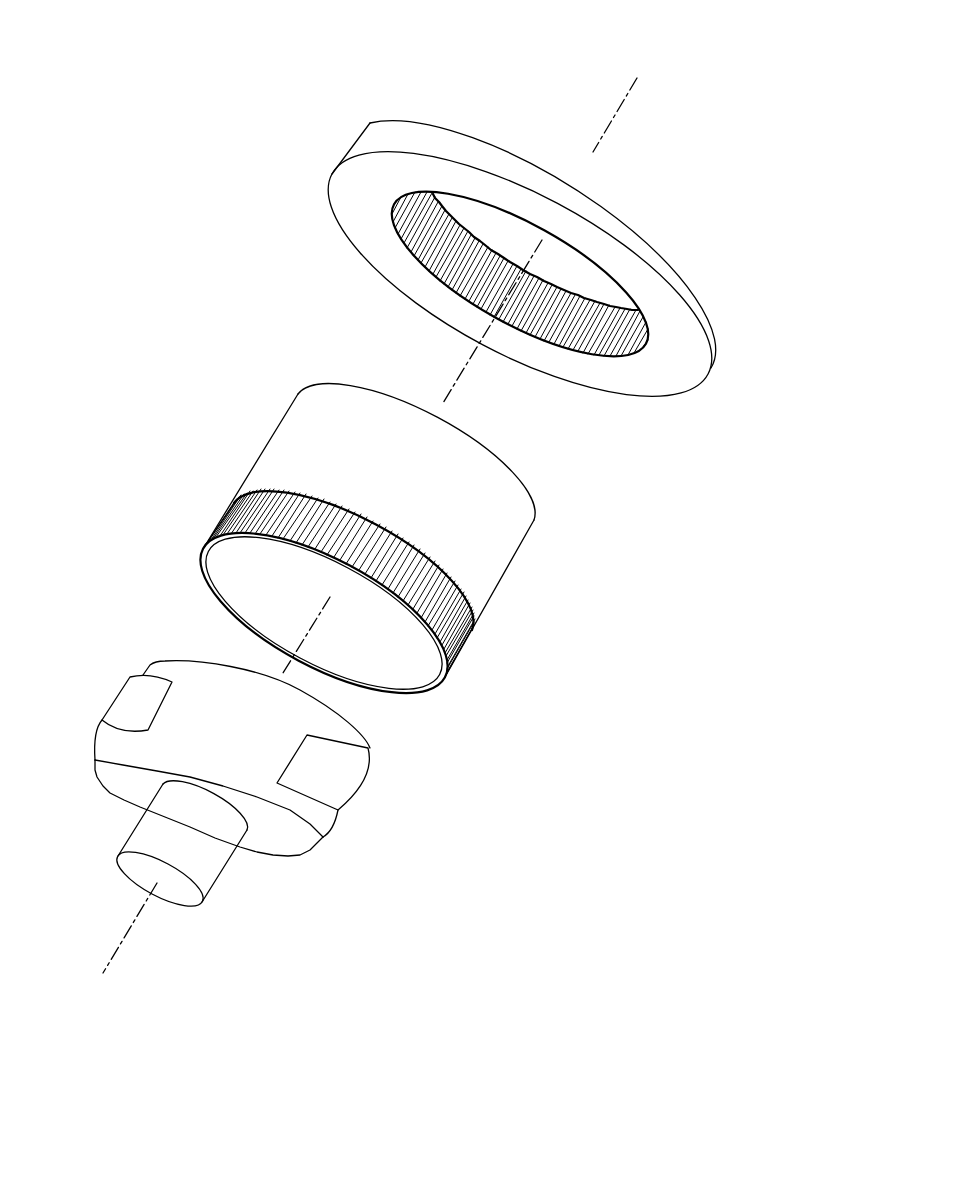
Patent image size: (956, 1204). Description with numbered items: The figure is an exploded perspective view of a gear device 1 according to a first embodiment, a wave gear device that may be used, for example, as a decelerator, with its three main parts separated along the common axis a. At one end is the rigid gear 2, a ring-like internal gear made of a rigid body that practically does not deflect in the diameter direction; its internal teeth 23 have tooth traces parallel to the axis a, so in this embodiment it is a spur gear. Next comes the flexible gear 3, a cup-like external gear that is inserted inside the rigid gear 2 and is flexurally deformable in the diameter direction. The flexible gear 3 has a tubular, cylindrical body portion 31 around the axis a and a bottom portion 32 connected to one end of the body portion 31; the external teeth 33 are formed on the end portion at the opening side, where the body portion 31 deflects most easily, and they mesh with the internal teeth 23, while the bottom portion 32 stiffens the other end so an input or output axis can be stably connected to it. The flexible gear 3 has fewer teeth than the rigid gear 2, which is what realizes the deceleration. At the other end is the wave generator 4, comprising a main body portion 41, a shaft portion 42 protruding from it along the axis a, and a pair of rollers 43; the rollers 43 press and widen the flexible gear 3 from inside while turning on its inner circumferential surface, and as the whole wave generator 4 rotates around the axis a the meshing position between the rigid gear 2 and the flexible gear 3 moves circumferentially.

The gear device 1 is at (168, 166).
The rigid gear 2 is at (409, 88).
The internal teeth 23 is at (578, 323).
The flexible gear 3 is at (258, 440).
The body portion 31 is at (290, 405).
The bottom portion 32 is at (497, 452).
The external teeth 33 is at (460, 632).
The wave generator 4 is at (170, 650).
The main body portion 41 is at (360, 745).
The shaft portion 42 is at (208, 863).
The pair of rollers 43 is at (123, 705).
The axis a is at (123, 945).